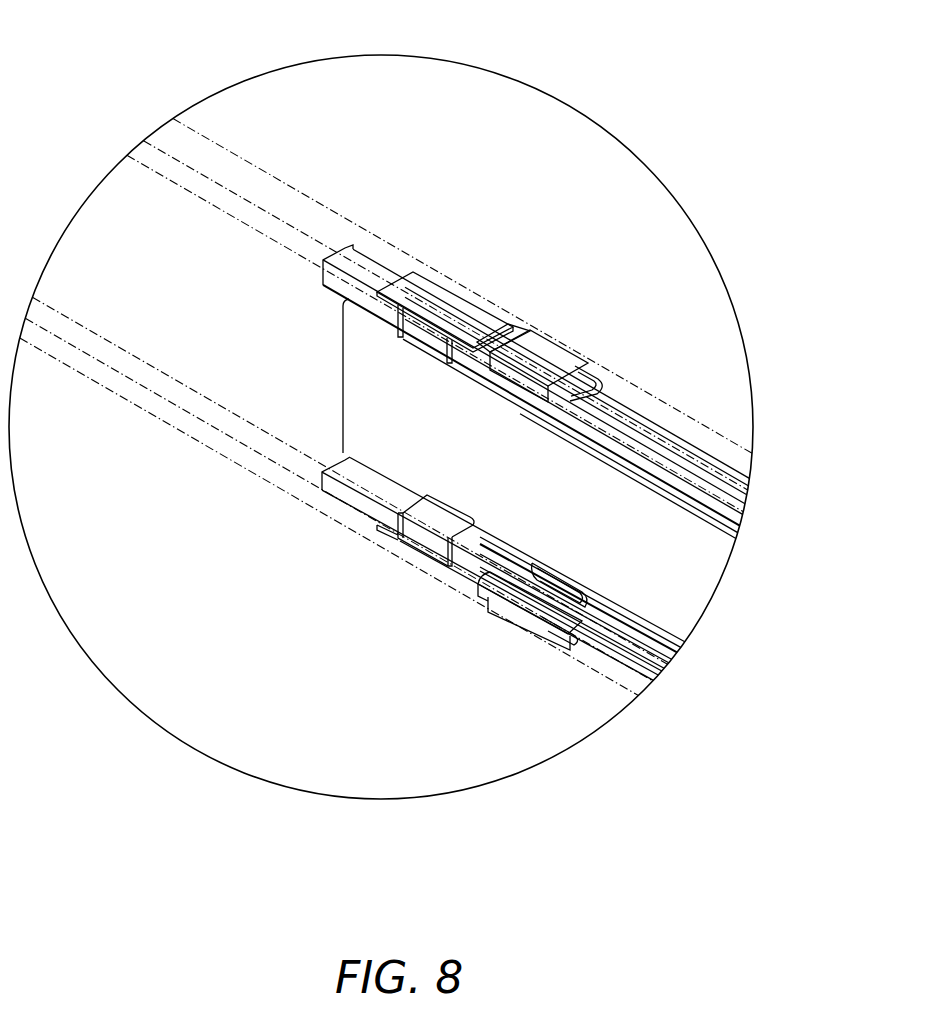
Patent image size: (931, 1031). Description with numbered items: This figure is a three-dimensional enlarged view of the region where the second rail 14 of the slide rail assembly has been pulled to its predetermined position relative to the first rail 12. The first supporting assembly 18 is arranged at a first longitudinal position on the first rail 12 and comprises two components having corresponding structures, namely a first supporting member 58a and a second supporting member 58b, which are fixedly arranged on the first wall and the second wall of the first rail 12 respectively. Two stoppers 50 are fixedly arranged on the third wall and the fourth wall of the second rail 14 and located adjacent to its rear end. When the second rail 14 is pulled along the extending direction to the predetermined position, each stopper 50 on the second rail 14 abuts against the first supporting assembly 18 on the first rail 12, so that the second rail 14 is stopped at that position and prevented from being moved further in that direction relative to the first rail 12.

The first rail 12 is at (268, 146).
The second rail 14 is at (405, 433).
The first supporting assembly 18 is at (579, 332).
The stopper 50 is at (450, 310).
The first supporting member 58a is at (499, 338).
The second supporting member 58b is at (571, 624).